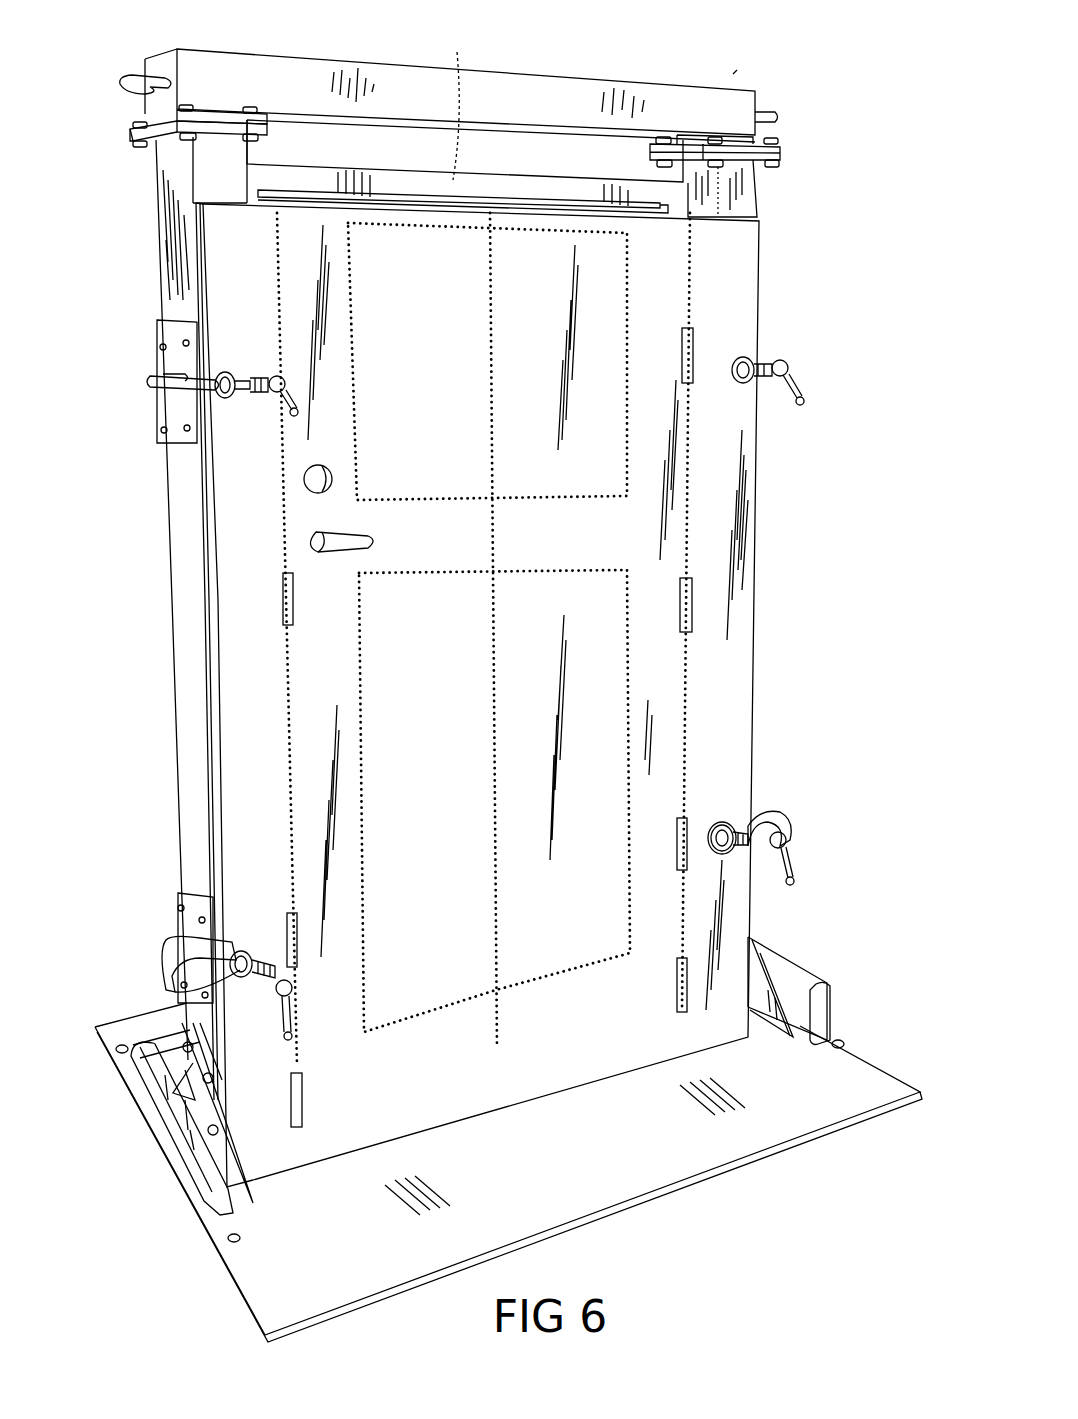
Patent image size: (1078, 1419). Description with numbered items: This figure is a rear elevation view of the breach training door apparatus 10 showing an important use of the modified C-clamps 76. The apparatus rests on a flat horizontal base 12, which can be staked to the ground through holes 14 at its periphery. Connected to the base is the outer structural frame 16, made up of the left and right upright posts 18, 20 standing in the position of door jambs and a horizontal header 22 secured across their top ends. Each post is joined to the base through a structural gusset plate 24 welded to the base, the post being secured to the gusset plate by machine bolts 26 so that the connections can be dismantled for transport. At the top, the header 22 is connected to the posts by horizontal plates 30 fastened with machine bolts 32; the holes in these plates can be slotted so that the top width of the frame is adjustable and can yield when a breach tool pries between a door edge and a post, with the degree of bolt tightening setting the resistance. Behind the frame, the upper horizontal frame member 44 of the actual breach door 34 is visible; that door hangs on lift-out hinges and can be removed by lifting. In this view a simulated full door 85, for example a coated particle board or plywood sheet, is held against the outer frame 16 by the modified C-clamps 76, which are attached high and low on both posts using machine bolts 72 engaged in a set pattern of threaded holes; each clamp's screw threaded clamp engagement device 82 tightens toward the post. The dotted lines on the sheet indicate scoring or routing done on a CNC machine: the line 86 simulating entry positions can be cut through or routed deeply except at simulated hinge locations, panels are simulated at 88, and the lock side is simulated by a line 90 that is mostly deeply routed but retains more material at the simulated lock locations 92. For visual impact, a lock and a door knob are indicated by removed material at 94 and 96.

The breach training door apparatus 10 is at (733, 74).
The base 12 is at (885, 1072).
The holes 14 is at (840, 1042).
The outer structural frame 16 is at (152, 242).
The upright post 18 is at (190, 706).
The upright post 20 is at (746, 548).
The header 22 is at (383, 76).
The gusset plate 24 is at (750, 946).
The machine bolts 26 is at (212, 1130).
The horizontal plates 30 is at (130, 126).
The machine bolts 32 is at (184, 106).
The door 34 is at (600, 180).
The upper horizontal frame member 44 is at (463, 118).
The machine bolts 72 is at (162, 347).
The modified C-clamp 76 is at (142, 385).
The screw threaded clamp engagement device 82 is at (720, 828).
The simulated full door 85 is at (738, 273).
The line 86 is at (690, 516).
The simulated panels 88 is at (600, 428).
The simulated lock side line 90 is at (288, 663).
The simulated lock locations 92 is at (694, 370).
The simulated lock 94 is at (305, 482).
The simulated door knob 96 is at (310, 541).